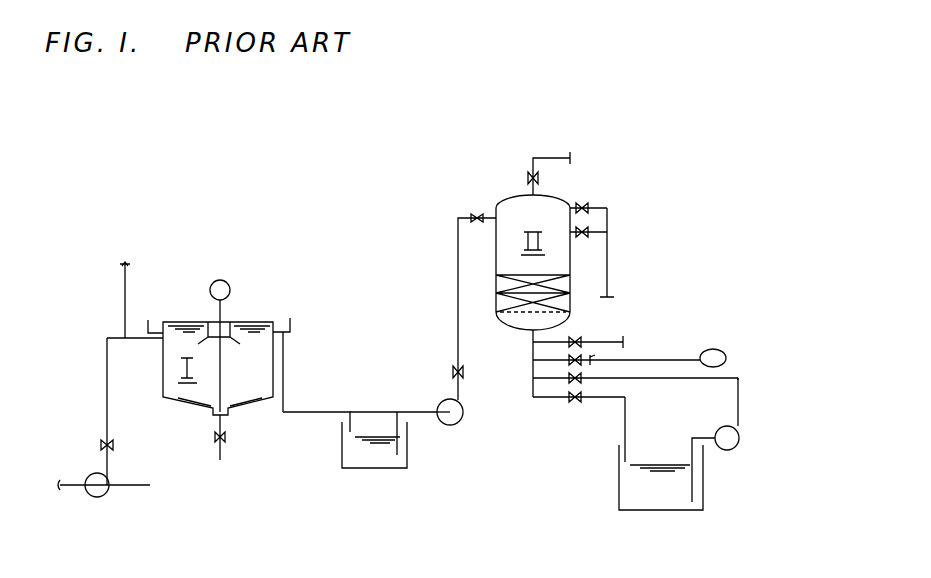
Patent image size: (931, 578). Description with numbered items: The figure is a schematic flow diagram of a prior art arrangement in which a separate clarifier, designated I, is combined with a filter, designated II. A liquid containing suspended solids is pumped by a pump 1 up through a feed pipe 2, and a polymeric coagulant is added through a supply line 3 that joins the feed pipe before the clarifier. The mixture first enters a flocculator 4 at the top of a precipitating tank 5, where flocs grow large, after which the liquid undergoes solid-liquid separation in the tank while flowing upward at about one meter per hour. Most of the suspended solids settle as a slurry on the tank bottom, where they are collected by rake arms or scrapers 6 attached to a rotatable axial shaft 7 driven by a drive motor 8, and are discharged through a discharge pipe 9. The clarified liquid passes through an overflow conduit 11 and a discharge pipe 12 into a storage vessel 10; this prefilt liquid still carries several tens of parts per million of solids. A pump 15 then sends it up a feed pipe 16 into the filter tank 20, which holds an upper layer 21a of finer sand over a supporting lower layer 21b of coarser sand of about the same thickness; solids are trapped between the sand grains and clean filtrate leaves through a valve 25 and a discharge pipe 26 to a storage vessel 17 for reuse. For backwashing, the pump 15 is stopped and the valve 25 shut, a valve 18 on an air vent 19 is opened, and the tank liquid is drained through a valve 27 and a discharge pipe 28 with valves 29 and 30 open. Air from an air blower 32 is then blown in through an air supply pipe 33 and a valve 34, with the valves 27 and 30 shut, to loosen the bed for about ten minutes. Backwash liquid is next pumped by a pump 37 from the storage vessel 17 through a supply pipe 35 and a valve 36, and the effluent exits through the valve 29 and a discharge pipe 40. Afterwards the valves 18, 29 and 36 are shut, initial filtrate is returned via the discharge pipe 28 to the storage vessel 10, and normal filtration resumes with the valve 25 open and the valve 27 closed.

The pump 1 is at (156, 478).
The feed pipe 2 is at (107, 410).
The supply line 3 is at (125, 297).
The flocculator 4 is at (228, 324).
The precipitating tank 5 is at (163, 357).
The rake arms or scrapers 6 is at (242, 398).
The rotatable axial shaft 7 is at (221, 365).
The drive motor 8 is at (222, 280).
The discharge pipe 9 is at (222, 458).
The storage vessel 10 is at (345, 446).
The overflow conduit 11 is at (290, 320).
The discharge pipe 12 is at (312, 412).
The pump 15 is at (452, 421).
The feed pipe 16 is at (458, 272).
The storage vessel 17 is at (632, 494).
The valve 18 is at (540, 178).
The air vent 19 is at (547, 158).
The filter tank 20 is at (513, 195).
The upper layer 21a is at (496, 283).
The lower layer 21b is at (496, 303).
The valve 25 is at (577, 403).
The discharge pipe 26 is at (623, 420).
The valve 27 is at (575, 340).
The discharge pipe 28 is at (617, 340).
The valve 29 is at (588, 205).
The valve 30 is at (585, 238).
The air blower 32 is at (716, 350).
The air supply pipe 33 is at (662, 362).
The valve 34 is at (587, 353).
The supply pipe 35 is at (740, 396).
The valve 36 is at (567, 383).
The pump 37 is at (742, 443).
The discharge pipe 40 is at (608, 240).